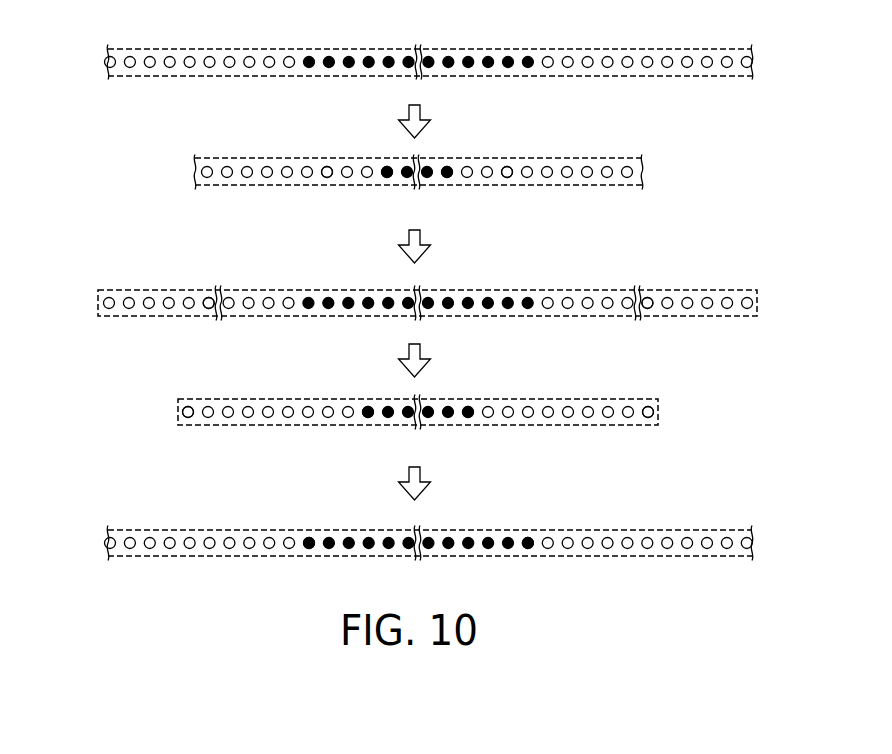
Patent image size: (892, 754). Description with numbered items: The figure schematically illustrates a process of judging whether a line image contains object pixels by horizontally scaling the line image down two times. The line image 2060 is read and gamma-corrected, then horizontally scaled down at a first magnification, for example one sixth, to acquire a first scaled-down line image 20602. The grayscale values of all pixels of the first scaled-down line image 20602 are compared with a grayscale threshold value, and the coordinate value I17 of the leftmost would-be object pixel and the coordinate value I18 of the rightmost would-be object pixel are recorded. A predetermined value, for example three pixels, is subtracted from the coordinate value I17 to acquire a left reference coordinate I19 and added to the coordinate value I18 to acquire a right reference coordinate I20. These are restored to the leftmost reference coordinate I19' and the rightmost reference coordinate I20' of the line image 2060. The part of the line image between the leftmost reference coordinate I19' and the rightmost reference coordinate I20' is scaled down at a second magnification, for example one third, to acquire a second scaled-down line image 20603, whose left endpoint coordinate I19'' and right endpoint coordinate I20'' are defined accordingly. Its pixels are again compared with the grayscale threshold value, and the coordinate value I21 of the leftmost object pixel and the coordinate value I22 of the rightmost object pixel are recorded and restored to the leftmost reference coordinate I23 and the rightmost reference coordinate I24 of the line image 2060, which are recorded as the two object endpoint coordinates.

The line image 2060 is at (632, 48).
The first scaled-down line image 20602 is at (505, 157).
The second scaled-down line image 20603 is at (528, 398).
The left reference coordinate I19 is at (323, 193).
The coordinate value of the leftmost would-be object pixel I17 is at (384, 178).
The coordinate value of the rightmost would-be object pixel I18 is at (450, 178).
The right reference coordinate I20 is at (514, 193).
The leftmost reference coordinate I19' is at (198, 331).
The rightmost reference coordinate I20' is at (656, 330).
The left endpoint coordinate I19'' is at (178, 439).
The right endpoint coordinate I20'' is at (660, 437).
The coordinate value of the leftmost object pixel I21 is at (365, 418).
The coordinate value of the rightmost object pixel I22 is at (471, 418).
The leftmost reference coordinate I23 is at (306, 549).
The rightmost reference coordinate I24 is at (531, 549).